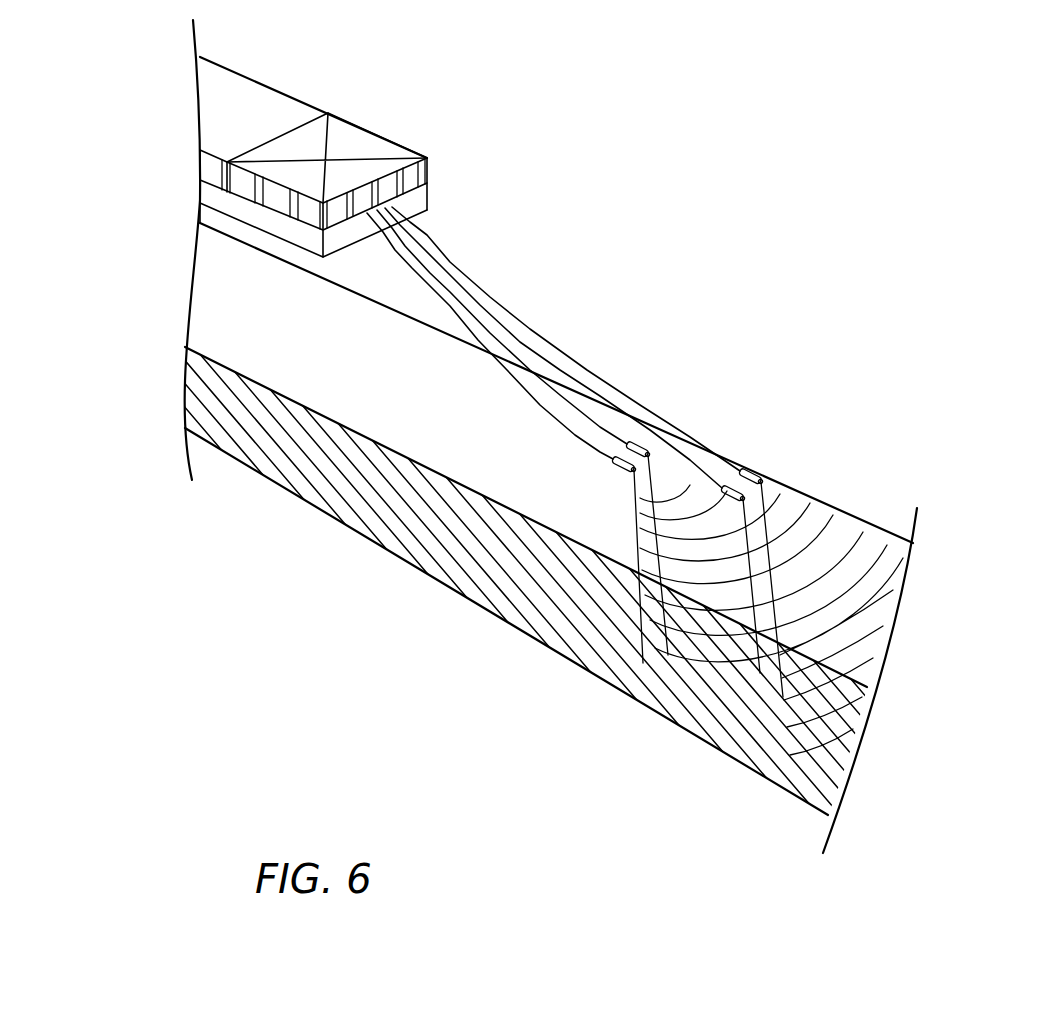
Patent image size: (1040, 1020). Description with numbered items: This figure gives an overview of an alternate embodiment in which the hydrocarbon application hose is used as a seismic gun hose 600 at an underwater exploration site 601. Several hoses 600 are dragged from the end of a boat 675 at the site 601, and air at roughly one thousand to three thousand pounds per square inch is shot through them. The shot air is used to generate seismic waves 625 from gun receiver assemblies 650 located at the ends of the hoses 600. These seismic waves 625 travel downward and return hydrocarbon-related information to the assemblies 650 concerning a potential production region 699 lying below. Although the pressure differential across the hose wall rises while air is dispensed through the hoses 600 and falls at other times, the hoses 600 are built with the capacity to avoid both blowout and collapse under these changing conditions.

The boat 675 is at (430, 106).
The seismic gun hose 600 is at (557, 345).
The gun receiver assembly 650 is at (730, 478).
The underwater exploration site 601 is at (865, 451).
The seismic waves 625 is at (862, 602).
The potential production region 699 is at (555, 587).